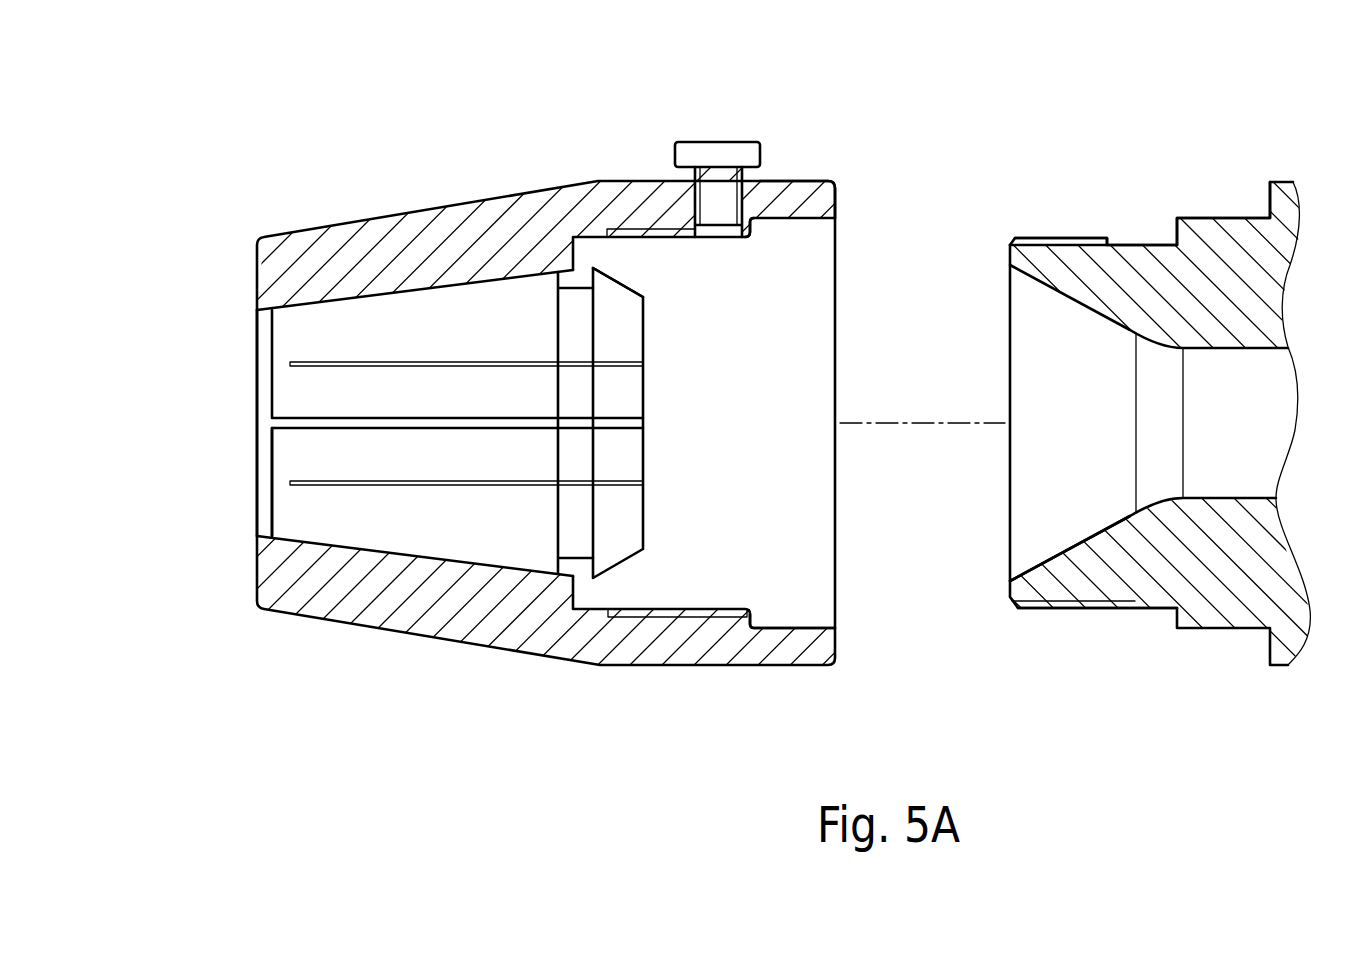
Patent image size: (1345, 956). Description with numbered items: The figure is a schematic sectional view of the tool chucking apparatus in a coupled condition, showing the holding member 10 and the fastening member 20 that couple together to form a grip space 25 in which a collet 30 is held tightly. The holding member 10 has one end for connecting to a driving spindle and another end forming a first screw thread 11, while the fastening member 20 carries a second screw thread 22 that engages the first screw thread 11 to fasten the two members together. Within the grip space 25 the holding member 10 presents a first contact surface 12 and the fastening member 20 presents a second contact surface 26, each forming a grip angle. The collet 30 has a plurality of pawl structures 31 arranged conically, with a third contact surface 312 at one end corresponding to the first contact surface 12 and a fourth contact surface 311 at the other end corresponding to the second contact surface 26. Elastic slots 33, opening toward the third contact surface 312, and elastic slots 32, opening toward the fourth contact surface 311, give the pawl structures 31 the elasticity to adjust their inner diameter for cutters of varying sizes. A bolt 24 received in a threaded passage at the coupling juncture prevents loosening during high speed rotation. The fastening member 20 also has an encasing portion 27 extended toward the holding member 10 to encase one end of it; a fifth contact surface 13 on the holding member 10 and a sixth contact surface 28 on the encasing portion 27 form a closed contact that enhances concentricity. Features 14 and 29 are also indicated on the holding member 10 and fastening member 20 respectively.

The holding member 10 is at (1285, 182).
The first screw thread 11 is at (1067, 610).
The first contact surface 12 is at (1032, 555).
The fifth contact surface 13 is at (1213, 217).
The front lip 14 is at (1175, 236).
The fastening member 20 is at (458, 197).
The second screw thread 22 is at (720, 617).
The bolt 24 is at (708, 150).
The grip space 25 is at (265, 381).
The second contact surface 26 is at (343, 297).
The encasing portion 27 is at (798, 195).
The sixth contact surface 28 is at (806, 628).
The notch 29 is at (753, 227).
The collet 30 is at (362, 534).
The pawl structures 31 is at (307, 448).
The elastic slots 32 is at (443, 430).
The elastic slots 33 is at (527, 362).
The fourth contact surface 311 is at (415, 556).
The third contact surface 312 is at (624, 283).